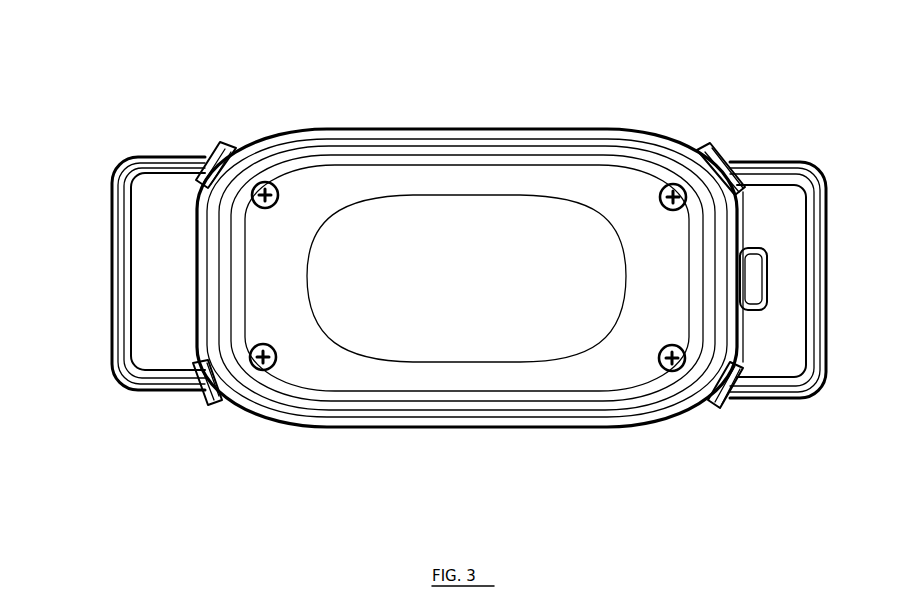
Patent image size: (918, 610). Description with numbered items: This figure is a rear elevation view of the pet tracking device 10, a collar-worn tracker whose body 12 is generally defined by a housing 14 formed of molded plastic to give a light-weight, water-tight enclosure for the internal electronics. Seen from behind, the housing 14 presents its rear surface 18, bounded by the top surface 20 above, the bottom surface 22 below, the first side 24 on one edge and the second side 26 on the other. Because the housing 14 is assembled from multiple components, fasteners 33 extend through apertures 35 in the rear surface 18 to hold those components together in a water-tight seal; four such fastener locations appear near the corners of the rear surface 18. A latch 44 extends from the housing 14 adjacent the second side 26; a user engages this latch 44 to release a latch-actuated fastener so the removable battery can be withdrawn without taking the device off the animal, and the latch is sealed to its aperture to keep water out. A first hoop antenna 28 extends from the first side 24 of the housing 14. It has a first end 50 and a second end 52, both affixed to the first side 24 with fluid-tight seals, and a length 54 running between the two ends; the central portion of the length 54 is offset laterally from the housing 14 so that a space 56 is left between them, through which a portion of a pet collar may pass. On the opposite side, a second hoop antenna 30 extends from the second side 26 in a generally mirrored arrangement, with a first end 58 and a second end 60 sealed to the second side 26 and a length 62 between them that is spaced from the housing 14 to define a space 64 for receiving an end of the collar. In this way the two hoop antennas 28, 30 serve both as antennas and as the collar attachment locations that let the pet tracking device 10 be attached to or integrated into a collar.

The pet tracking device 10 is at (742, 70).
The body 12 is at (580, 452).
The housing 14 is at (340, 165).
The rear surface 18 is at (472, 291).
The top surface 20 is at (527, 130).
The bottom surface 22 is at (378, 426).
The first side 24 is at (197, 280).
The second side 26 is at (740, 352).
The first hoop antenna 28 is at (160, 388).
The second hoop antenna 30 is at (790, 392).
The fasteners 33 is at (278, 204).
The apertures 35 is at (278, 192).
The latch 44 is at (750, 266).
The first end 50 is at (210, 162).
The second end 52 is at (205, 398).
The length 54 is at (118, 226).
The space 56 is at (158, 321).
The first end 58 is at (740, 166).
The second end 60 is at (740, 400).
The length 62 is at (820, 278).
The space 64 is at (790, 239).